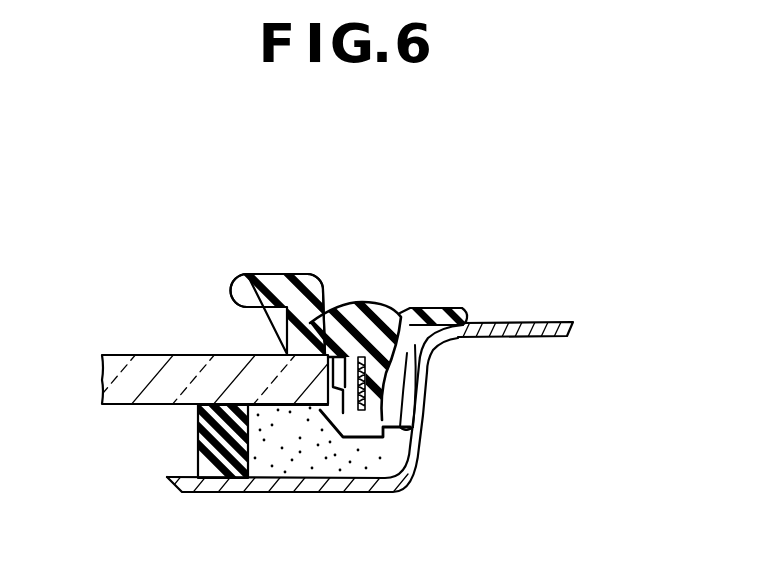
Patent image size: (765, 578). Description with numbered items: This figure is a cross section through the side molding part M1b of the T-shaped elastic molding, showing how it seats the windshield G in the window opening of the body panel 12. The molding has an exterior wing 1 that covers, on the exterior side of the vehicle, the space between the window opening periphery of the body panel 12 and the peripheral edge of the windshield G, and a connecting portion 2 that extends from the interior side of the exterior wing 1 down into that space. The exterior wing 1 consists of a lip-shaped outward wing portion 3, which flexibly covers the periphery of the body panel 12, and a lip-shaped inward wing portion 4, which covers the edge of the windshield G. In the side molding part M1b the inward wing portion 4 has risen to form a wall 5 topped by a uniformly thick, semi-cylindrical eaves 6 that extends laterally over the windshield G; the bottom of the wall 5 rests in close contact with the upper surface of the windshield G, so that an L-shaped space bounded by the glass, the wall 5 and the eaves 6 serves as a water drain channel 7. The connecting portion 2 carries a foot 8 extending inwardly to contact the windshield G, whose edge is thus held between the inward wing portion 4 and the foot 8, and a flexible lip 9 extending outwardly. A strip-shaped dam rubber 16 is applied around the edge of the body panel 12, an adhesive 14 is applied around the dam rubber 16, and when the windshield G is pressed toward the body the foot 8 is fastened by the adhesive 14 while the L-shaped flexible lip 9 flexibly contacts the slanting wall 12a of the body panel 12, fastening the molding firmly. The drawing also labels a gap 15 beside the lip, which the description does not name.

The side molding part M1b is at (390, 266).
The exterior wing 1 is at (347, 318).
The connecting portion 2 is at (415, 360).
The outward wing portion 3 is at (432, 308).
The inward wing portion 4 is at (303, 213).
The wall 5 is at (325, 292).
The semi-cylindrical eaves 6 is at (233, 288).
The water drain channel 7 is at (255, 334).
The foot 8 is at (333, 420).
The flexible lip 9 is at (430, 400).
The body panel 12 is at (523, 330).
The slanting wall 12a is at (417, 453).
The adhesive 14 is at (273, 457).
The gap 15 is at (401, 348).
The dam rubber 16 is at (205, 433).
The windshield G is at (122, 398).